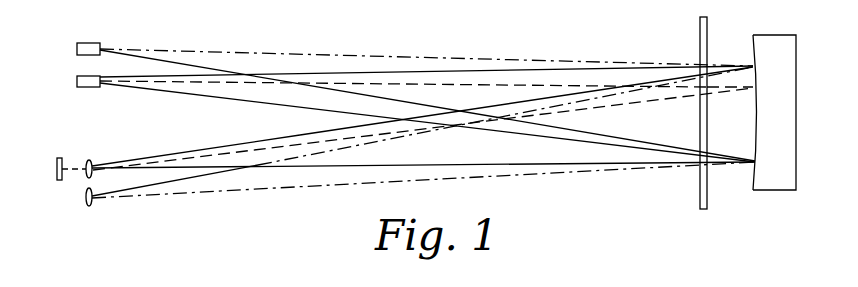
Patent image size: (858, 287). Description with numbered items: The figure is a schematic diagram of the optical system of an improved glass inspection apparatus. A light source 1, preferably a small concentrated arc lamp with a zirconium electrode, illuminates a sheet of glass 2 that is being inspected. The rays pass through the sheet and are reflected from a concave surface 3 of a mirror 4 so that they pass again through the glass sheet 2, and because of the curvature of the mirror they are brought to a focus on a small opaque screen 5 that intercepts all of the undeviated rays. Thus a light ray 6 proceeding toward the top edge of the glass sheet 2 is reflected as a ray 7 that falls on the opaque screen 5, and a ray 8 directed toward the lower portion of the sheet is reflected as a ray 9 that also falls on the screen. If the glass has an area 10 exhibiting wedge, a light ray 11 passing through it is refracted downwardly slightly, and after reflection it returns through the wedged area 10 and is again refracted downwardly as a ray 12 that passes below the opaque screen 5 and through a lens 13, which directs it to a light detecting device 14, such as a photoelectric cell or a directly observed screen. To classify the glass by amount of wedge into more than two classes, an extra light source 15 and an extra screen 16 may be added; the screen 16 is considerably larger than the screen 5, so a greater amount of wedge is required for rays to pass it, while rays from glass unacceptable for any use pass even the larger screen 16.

The light source 1 is at (78, 85).
The sheet of glass 2 is at (700, 195).
The concave surface 3 is at (753, 178).
The mirror 4 is at (788, 150).
The opaque screen 5 is at (95, 167).
The light ray 6 is at (315, 74).
The ray 7 is at (508, 103).
The ray 8 is at (188, 94).
The ray 9 is at (464, 163).
The area exhibiting wedge 10 is at (707, 88).
The light ray 11 is at (458, 85).
The ray 12 is at (665, 98).
The lens 13 is at (93, 160).
The light detecting device 14 is at (56, 161).
The light source 15 is at (76, 43).
The screen 16 is at (94, 204).